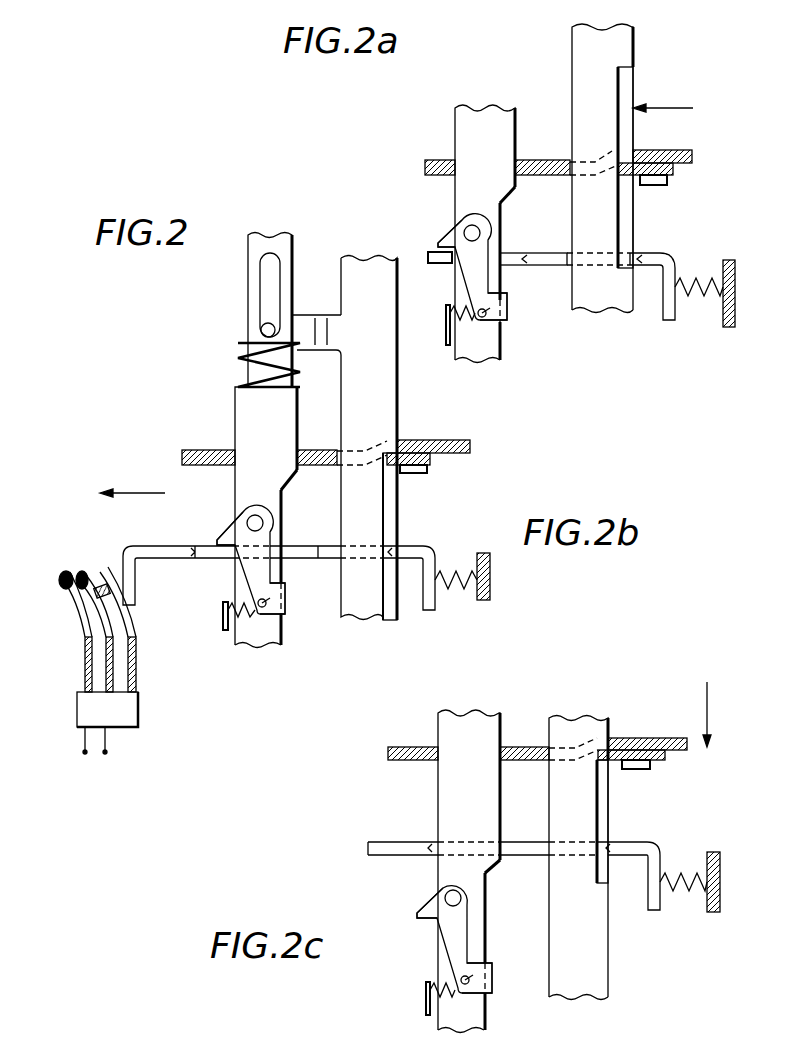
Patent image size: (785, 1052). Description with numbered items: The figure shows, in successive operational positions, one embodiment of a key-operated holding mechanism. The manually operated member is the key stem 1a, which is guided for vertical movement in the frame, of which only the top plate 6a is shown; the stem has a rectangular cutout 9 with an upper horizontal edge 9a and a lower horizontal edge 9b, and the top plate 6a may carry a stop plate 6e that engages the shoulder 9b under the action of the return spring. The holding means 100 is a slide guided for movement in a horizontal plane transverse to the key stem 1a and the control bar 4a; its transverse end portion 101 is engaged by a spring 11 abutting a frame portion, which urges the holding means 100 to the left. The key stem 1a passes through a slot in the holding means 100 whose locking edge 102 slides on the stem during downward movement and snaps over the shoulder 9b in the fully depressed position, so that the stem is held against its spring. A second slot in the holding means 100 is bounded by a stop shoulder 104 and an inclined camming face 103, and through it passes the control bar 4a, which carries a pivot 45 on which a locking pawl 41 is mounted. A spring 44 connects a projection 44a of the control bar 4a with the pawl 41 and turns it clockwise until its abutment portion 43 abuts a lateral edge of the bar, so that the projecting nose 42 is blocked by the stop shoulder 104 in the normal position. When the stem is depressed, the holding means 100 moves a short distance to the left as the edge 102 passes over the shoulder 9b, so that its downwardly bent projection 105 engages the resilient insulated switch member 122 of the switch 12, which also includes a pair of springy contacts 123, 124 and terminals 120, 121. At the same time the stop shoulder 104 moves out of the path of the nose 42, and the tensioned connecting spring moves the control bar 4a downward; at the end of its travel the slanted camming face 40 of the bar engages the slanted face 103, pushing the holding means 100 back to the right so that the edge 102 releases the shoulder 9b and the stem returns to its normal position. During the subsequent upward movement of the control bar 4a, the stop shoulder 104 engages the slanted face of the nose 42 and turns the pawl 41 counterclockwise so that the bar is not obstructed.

In FIG. 2a, the key stem 1a is at (580, 55).
In FIG. 2, the key stem 1a is at (353, 381).
In FIG. 2c, the key stem 1a is at (578, 730).
In FIG. 2a, the control bar 4a is at (481, 118).
In FIG. 2, the control bar 4a is at (245, 400).
In FIG. 2c, the control bar 4a is at (485, 722).
In FIG. 2a, the top plate 6a is at (432, 160).
In FIG. 2, the top plate 6a is at (182, 456).
In FIG. 2c, the top plate 6a is at (388, 752).
In FIG. 2a, the stop plate 6e is at (636, 156).
In FIG. 2, the stop plate 6e is at (432, 462).
In FIG. 2c, the stop plate 6e is at (665, 763).
In FIG. 2a, the rectangular cutout 9 is at (670, 108).
In FIG. 2a, the upper horizontal edge 9a is at (636, 70).
In FIG. 2, the upper horizontal edge 9a is at (400, 446).
In FIG. 2c, the upper horizontal edge 9a is at (608, 736).
In FIG. 2a, the lower horizontal edge 9b is at (634, 183).
In FIG. 2, the lower horizontal edge 9b is at (390, 600).
In FIG. 2c, the lower horizontal edge 9b is at (606, 880).
In FIG. 2a, the spring 11 is at (695, 282).
In FIG. 2, the spring 11 is at (458, 562).
In FIG. 2c, the spring 11 is at (680, 858).
In FIG. 2, the switch 12 is at (125, 712).
In FIG. 2a, the slanted camming face 40 is at (515, 190).
In FIG. 2, the slanted camming face 40 is at (285, 487).
In FIG. 2c, the slanted camming face 40 is at (492, 863).
In FIG. 2a, the locking pawl 41 is at (470, 275).
In FIG. 2, the locking pawl 41 is at (250, 568).
In FIG. 2c, the locking pawl 41 is at (450, 928).
In FIG. 2a, the projecting nose 42 is at (447, 240).
In FIG. 2, the projecting nose 42 is at (226, 530).
In FIG. 2c, the projecting nose 42 is at (420, 903).
In FIG. 2a, the abutment portion 43 is at (507, 308).
In FIG. 2, the abutment portion 43 is at (287, 600).
In FIG. 2c, the abutment portion 43 is at (492, 978).
In FIG. 2a, the spring 44 is at (500, 342).
In FIG. 2, the spring 44 is at (262, 645).
In FIG. 2c, the spring 44 is at (448, 1003).
In FIG. 2a, the projection 44a is at (447, 318).
In FIG. 2, the projection 44a is at (225, 630).
In FIG. 2c, the projection 44a is at (425, 988).
In FIG. 2a, the pivot 45 is at (462, 218).
In FIG. 2, the pivot 45 is at (252, 516).
In FIG. 2c, the pivot 45 is at (462, 898).
In FIG. 2a, the holding means 100 is at (656, 268).
In FIG. 2, the holding means 100 is at (160, 558).
In FIG. 2c, the holding means 100 is at (652, 850).
In FIG. 2a, the transverse end portion 101 is at (673, 302).
In FIG. 2, the transverse end portion 101 is at (432, 604).
In FIG. 2c, the transverse end portion 101 is at (655, 912).
In FIG. 2a, the locking edge 102 is at (640, 268).
In FIG. 2, the locking edge 102 is at (390, 548).
In FIG. 2c, the locking edge 102 is at (608, 850).
In FIG. 2a, the inclined camming face 103 is at (520, 265).
In FIG. 2, the inclined camming face 103 is at (290, 558).
In FIG. 2c, the inclined camming face 103 is at (503, 854).
In FIG. 2a, the stop shoulder 104 is at (445, 253).
In FIG. 2, the stop shoulder 104 is at (195, 550).
In FIG. 2c, the stop shoulder 104 is at (428, 848).
In FIG. 2, the downwardly bent projection 105 is at (125, 570).
In FIG. 2, the terminal 120 is at (106, 754).
In FIG. 2, the terminal 121 is at (85, 754).
In FIG. 2, the resilient insulated switch member 122 is at (112, 608).
In FIG. 2, the springy contact 123 is at (80, 572).
In FIG. 2, the springy contact 124 is at (62, 576).